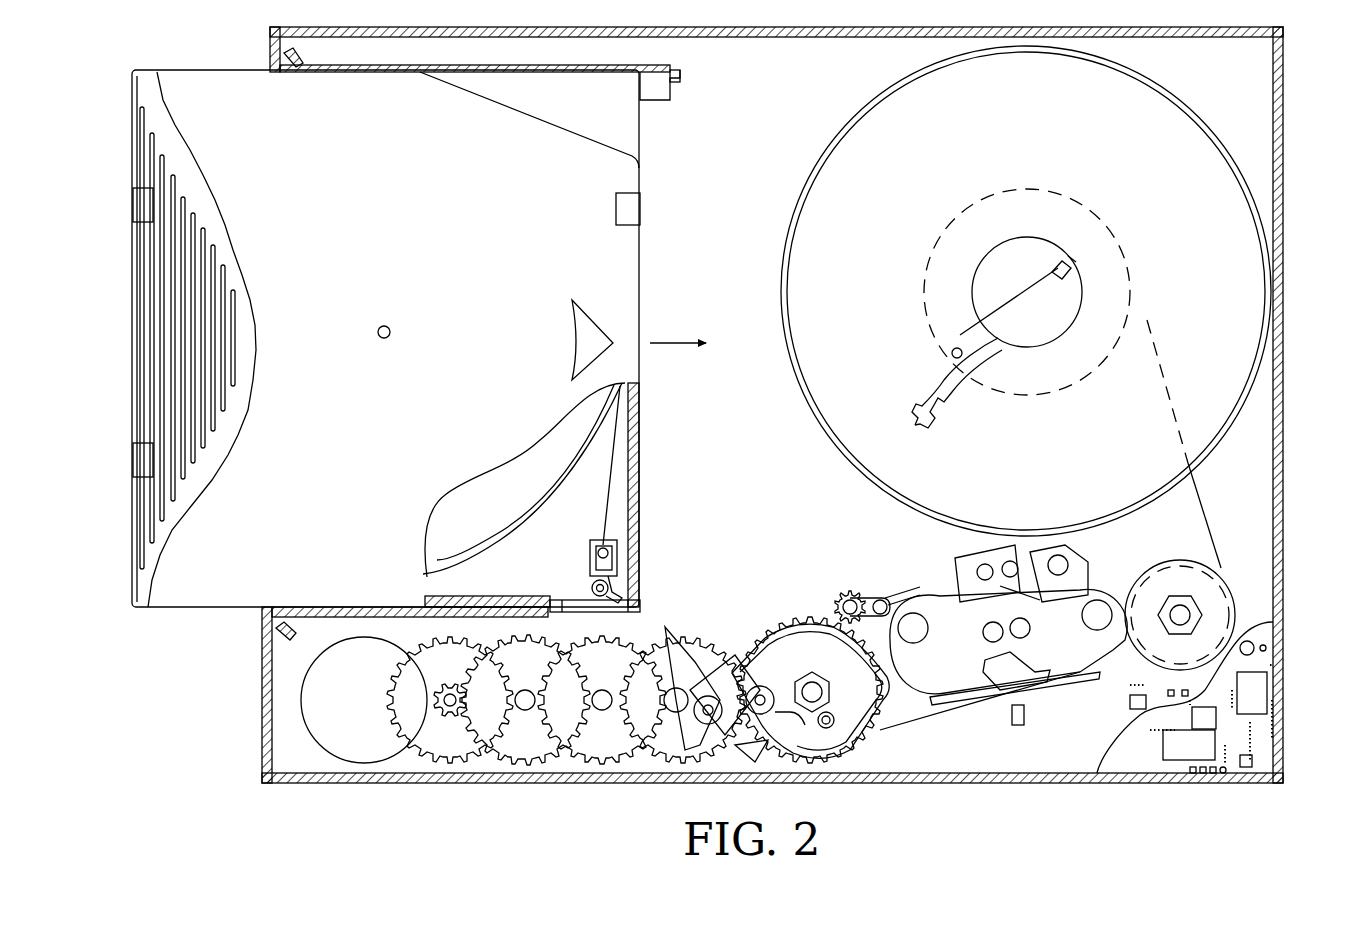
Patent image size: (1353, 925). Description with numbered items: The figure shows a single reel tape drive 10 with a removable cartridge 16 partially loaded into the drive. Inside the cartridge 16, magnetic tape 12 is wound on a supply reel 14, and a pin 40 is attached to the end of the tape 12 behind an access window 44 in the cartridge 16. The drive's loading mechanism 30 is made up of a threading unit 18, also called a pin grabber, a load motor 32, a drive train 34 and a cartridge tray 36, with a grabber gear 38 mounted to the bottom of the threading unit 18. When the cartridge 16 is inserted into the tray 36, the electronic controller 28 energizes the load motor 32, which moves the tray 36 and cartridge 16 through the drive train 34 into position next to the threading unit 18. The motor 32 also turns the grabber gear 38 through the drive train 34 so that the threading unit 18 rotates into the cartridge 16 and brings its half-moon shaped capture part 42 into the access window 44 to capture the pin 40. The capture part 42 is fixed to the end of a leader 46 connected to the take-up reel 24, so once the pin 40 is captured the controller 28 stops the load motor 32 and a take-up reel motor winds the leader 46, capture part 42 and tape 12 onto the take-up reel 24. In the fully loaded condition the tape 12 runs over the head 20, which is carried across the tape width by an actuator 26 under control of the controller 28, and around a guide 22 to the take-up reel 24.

The tape drive 10 is at (220, 783).
The magnetic tape 12 is at (607, 478).
The supply reel 14 is at (580, 438).
The removable cartridge 16 is at (622, 263).
The threading unit 18 is at (782, 645).
The head 20 is at (1018, 727).
The guide 22 is at (1220, 607).
The take-up reel 24 is at (1160, 120).
The actuator 26 is at (1110, 578).
The electronic controller 28 is at (1258, 752).
The loading mechanism 30 is at (705, 597).
The load motor 32 is at (362, 753).
The drive train 34 is at (487, 757).
The cartridge tray 36 is at (670, 68).
The grabber gear 38 is at (793, 618).
The pin 40 is at (597, 583).
The capture part 42 is at (667, 630).
The access window 44 is at (603, 609).
The leader 46 is at (932, 733).